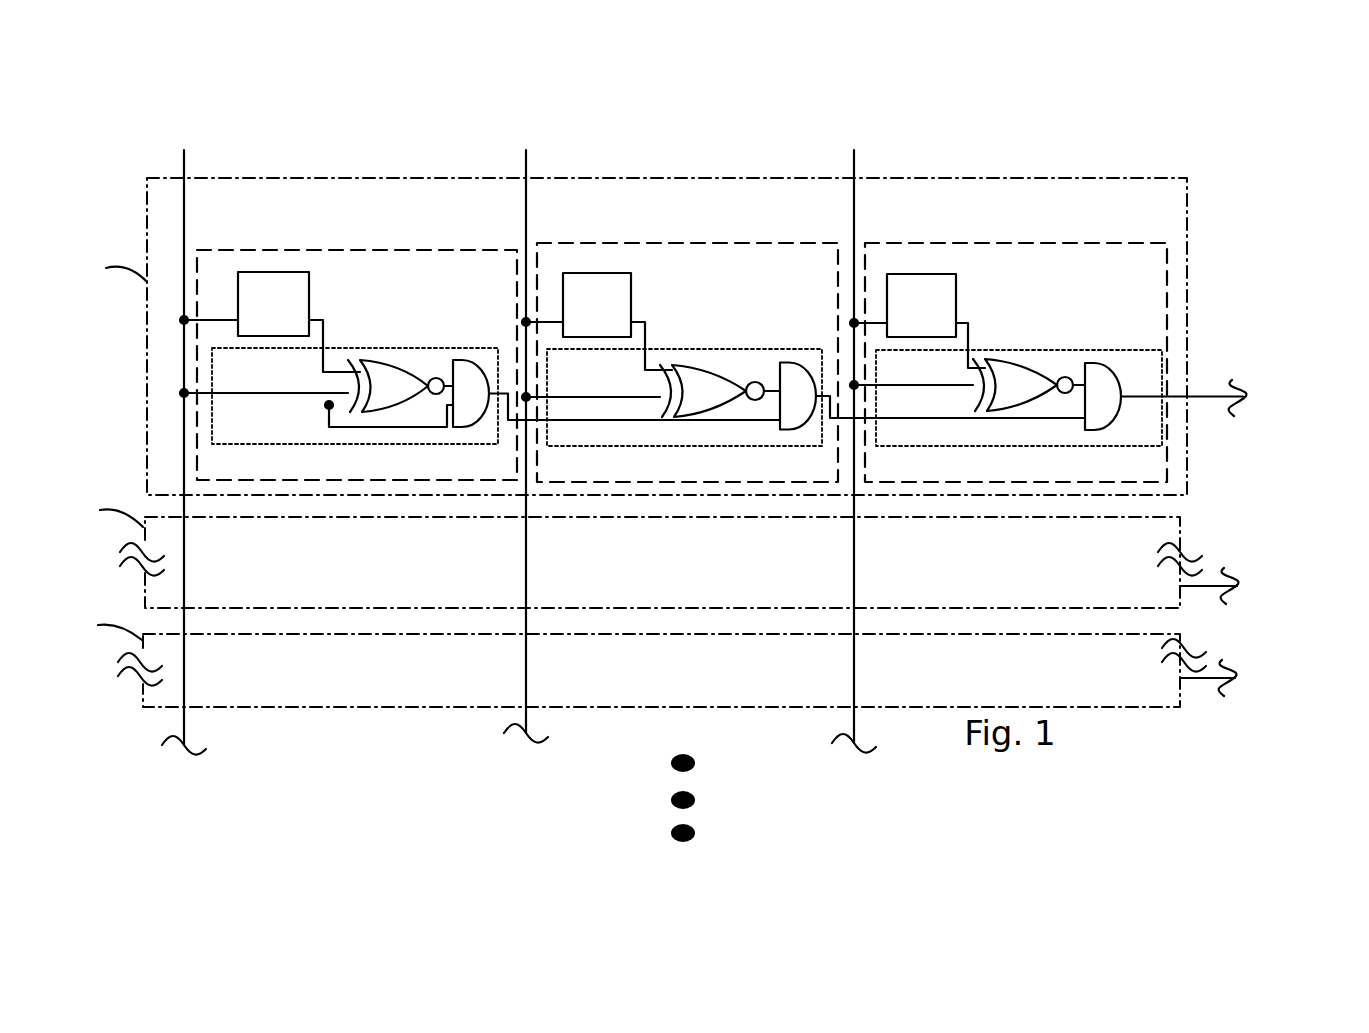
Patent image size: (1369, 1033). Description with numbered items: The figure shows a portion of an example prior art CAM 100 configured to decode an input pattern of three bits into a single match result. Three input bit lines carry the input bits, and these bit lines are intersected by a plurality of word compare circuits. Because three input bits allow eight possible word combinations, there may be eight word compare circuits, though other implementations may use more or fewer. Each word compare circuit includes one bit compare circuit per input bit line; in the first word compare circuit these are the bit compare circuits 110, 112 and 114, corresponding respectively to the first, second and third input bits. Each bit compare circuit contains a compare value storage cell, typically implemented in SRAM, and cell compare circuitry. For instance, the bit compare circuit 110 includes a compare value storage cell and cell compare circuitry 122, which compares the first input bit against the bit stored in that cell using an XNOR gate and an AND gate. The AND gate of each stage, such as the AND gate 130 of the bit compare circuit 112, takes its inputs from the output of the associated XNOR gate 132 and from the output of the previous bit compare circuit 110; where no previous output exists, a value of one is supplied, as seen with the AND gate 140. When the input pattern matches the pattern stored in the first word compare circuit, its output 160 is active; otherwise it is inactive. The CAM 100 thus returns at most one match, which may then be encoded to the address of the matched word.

The CAM 100 is at (635, 125).
The bit compare circuit 110 is at (370, 250).
The bit compare circuit 112 is at (712, 243).
The bit compare circuit 114 is at (1056, 243).
The cell compare circuitry 122 is at (393, 445).
The AND gate 130 is at (792, 373).
The XNOR gate 132 is at (734, 374).
The AND gate 140 is at (468, 372).
The output 160 is at (1196, 398).